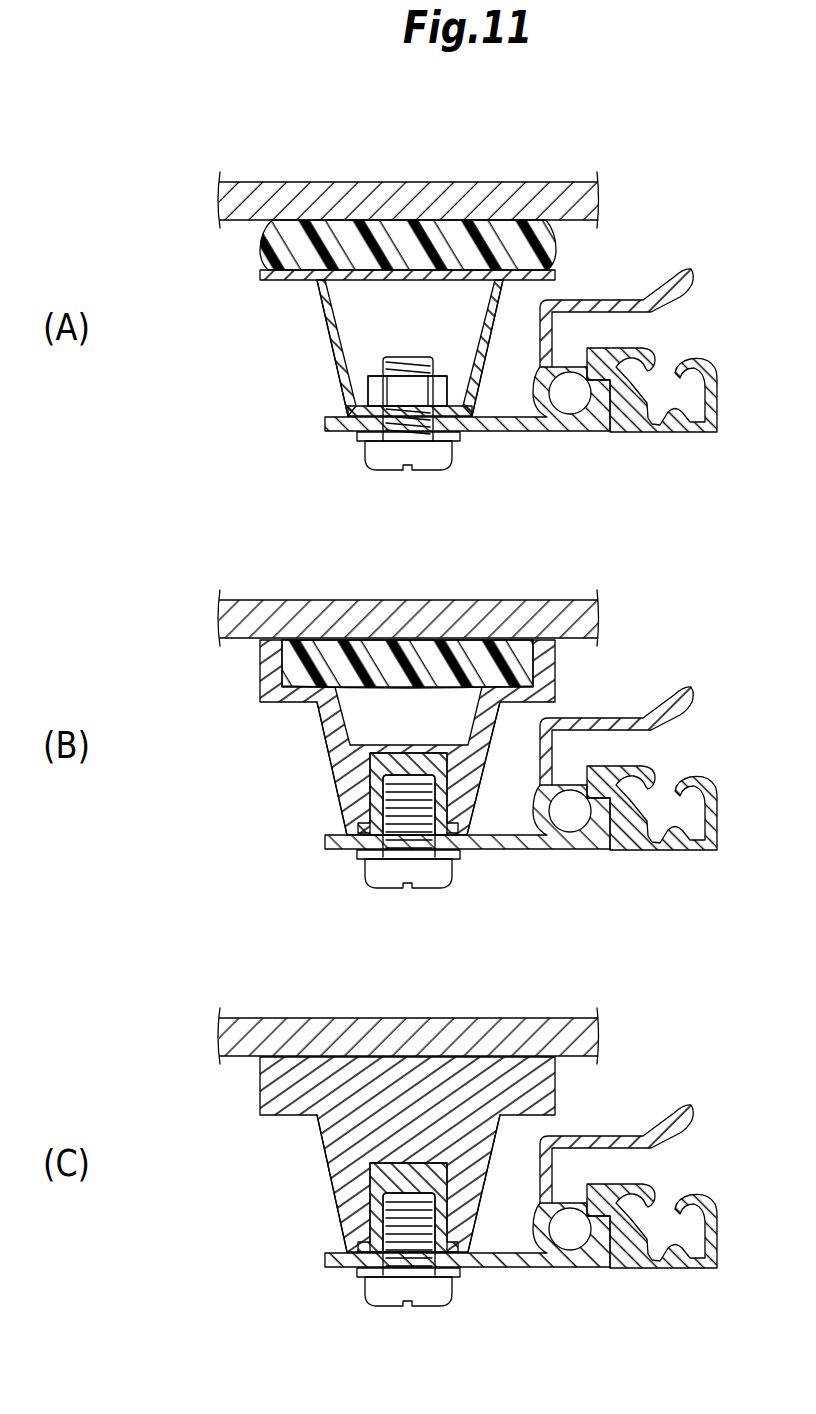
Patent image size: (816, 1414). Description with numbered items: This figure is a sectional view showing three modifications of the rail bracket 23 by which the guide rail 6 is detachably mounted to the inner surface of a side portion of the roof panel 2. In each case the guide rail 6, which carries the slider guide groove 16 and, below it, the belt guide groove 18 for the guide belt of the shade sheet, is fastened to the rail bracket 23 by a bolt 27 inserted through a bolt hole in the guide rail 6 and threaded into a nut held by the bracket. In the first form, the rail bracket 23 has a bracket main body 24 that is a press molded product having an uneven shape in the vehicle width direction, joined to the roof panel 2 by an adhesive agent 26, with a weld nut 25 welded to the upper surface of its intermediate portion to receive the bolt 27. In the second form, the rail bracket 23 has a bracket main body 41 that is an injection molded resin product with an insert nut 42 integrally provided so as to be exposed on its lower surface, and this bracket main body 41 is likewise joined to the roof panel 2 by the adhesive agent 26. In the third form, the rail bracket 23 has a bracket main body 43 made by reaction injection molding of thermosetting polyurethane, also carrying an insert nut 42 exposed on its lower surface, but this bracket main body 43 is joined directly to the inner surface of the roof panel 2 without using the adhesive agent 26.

The roof panel 2 is at (462, 192).
The guide rail 6 is at (546, 433).
The slider guide groove 16 is at (620, 316).
The belt guide groove 18 is at (672, 368).
The rail bracket 23 is at (314, 305).
The bracket main body 24 is at (334, 336).
The weld nut 25 is at (374, 392).
The adhesive agent 26 is at (383, 235).
The bolt 27 is at (418, 470).
The bracket main body 41 is at (330, 755).
The insert nut 42 is at (373, 807).
The bracket main body 43 is at (330, 1173).